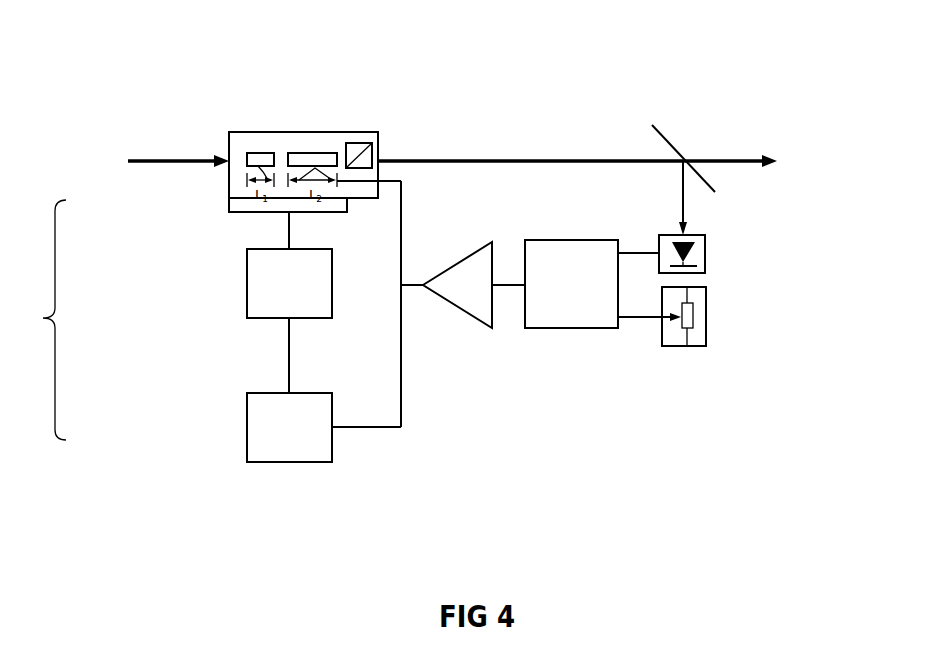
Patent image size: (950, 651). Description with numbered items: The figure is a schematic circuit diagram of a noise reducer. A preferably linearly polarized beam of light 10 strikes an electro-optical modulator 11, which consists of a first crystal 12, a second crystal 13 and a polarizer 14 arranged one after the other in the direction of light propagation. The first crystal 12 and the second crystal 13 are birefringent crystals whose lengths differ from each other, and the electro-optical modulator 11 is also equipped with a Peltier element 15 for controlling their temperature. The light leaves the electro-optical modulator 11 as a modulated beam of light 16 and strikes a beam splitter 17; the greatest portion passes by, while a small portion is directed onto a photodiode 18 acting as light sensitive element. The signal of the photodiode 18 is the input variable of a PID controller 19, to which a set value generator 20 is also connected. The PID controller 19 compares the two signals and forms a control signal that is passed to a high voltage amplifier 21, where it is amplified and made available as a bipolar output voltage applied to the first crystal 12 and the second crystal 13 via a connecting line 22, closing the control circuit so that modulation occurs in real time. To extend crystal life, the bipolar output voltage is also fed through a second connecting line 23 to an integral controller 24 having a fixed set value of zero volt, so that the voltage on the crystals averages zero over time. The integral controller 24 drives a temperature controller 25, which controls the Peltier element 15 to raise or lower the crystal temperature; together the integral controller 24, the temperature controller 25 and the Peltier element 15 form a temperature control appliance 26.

The beam of light 10 is at (172, 158).
The electro-optical modulator 11 is at (260, 133).
The first crystal 12 is at (268, 148).
The second crystal 13 is at (321, 146).
The polarizer 14 is at (367, 135).
The Peltier element 15 is at (229, 202).
The modulated beam of light 16 is at (544, 158).
The beam splitter 17 is at (658, 130).
The photodiode 18 is at (707, 252).
The PID controller 19 is at (561, 328).
The set value generator 20 is at (706, 317).
The high voltage amplifier 21 is at (458, 312).
The connecting line 22 is at (402, 231).
The second connecting line 23 is at (378, 428).
The integral controller 24 is at (247, 441).
The temperature controller 25 is at (247, 284).
The temperature control appliance 26 is at (42, 320).